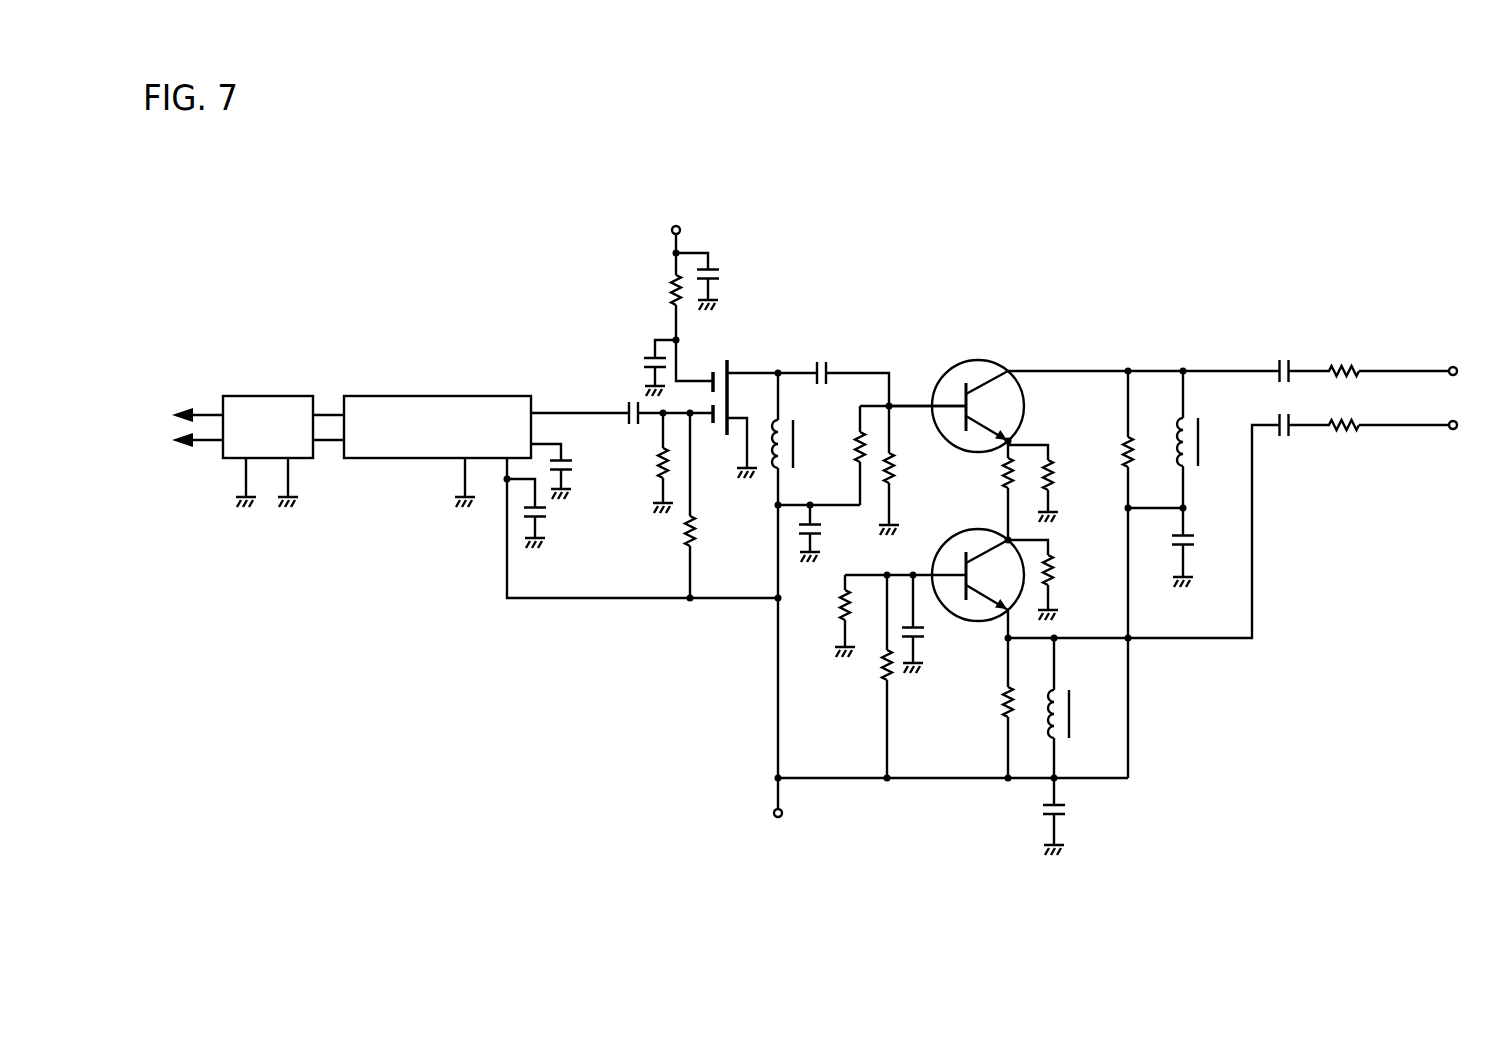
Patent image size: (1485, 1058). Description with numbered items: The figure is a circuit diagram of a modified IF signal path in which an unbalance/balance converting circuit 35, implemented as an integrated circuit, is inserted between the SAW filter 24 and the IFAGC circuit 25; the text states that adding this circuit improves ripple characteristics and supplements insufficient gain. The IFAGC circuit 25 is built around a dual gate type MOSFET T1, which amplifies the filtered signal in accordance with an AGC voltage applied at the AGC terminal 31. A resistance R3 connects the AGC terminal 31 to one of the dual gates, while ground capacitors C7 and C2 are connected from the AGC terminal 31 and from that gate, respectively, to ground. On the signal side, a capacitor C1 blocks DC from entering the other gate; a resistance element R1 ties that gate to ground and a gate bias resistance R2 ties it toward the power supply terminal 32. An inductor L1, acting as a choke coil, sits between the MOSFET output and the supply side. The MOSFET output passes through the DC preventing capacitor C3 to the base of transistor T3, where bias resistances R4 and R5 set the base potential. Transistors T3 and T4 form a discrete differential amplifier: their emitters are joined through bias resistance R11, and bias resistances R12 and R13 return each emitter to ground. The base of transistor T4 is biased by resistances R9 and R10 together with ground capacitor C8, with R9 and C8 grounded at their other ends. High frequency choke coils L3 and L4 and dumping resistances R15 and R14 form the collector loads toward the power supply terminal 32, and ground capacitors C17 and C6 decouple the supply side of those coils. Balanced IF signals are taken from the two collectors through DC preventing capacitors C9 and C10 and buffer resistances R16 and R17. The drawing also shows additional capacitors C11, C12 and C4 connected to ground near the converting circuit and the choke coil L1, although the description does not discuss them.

The SAW filter 24 is at (284, 396).
The unbalance/balance converting circuit 35 is at (502, 396).
The IFAGC circuit 25 is at (788, 262).
The AGC terminal 31 is at (676, 225).
The power supply terminal 32 is at (773, 813).
The dual gate type MOSFET T1 is at (745, 419).
The transistor T3 is at (956, 396).
The transistor T4 is at (934, 562).
The capacitor C1 is at (665, 426).
The ground capacitor C2 is at (644, 368).
The DC preventing capacitor C3 is at (833, 370).
The capacitor C4 is at (828, 533).
The ground capacitor C6 is at (1036, 816).
The ground capacitor C7 is at (716, 281).
The ground capacitor C8 is at (930, 624).
The DC preventing capacitor C9 is at (1297, 360).
The DC preventing capacitor C10 is at (1293, 413).
The capacitor C11 is at (585, 476).
The capacitor C12 is at (561, 526).
The ground capacitor C17 is at (1207, 547).
The resistance element R1 is at (649, 463).
The gate bias resistance R2 is at (708, 505).
The resistance R3 is at (656, 296).
The bias resistance R4 is at (841, 455).
The bias resistance R5 is at (905, 470).
The bias resistance R9 is at (826, 616).
The bias resistance R10 is at (862, 676).
The bias resistance R11 is at (984, 490).
The bias resistance R12 is at (1056, 483).
The bias resistance R13 is at (1056, 580).
The dumping resistance R14 is at (982, 708).
The dumping resistance R15 is at (1101, 574).
The buffer resistance R16 is at (1391, 357).
The buffer resistance R17 is at (1391, 410).
The inductor L1 is at (798, 439).
The high frequency choke coil L3 is at (1172, 439).
The high frequency choke coil L4 is at (1044, 708).